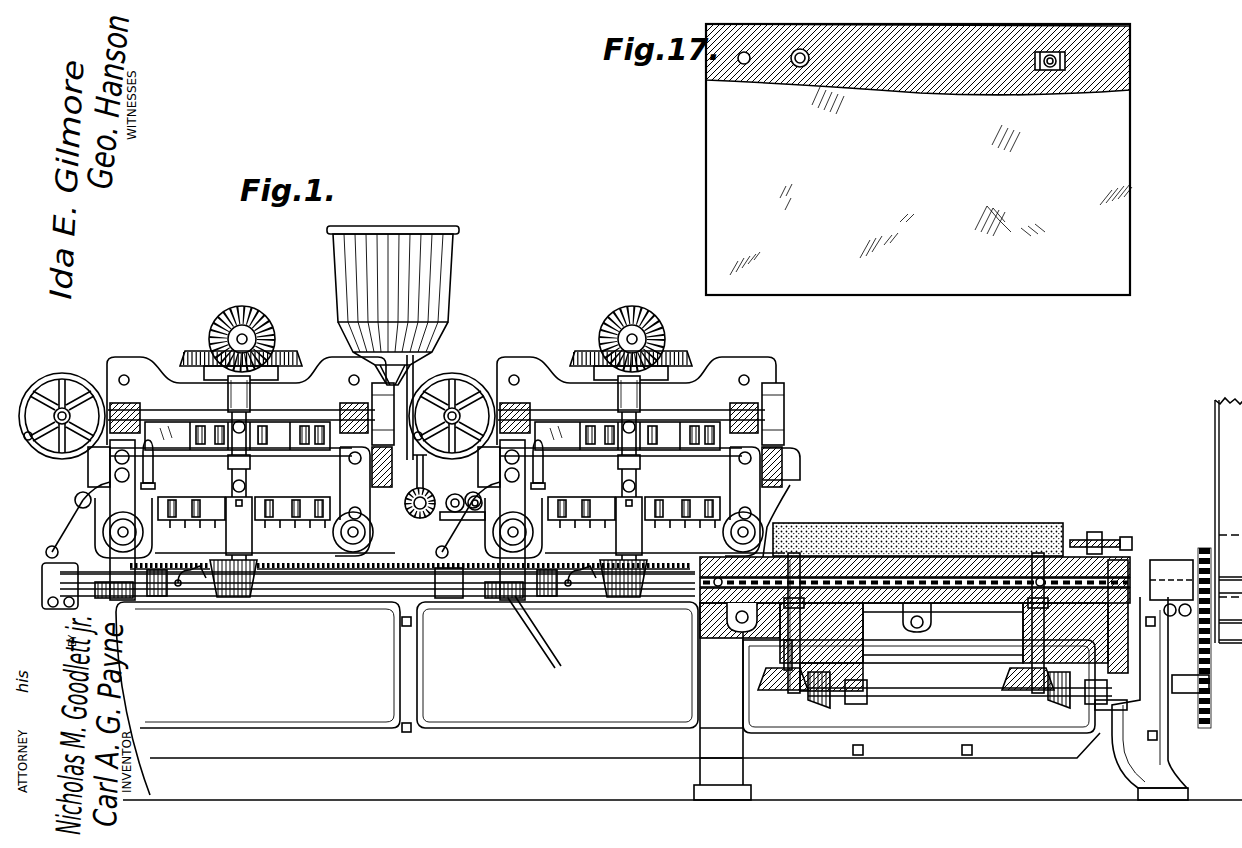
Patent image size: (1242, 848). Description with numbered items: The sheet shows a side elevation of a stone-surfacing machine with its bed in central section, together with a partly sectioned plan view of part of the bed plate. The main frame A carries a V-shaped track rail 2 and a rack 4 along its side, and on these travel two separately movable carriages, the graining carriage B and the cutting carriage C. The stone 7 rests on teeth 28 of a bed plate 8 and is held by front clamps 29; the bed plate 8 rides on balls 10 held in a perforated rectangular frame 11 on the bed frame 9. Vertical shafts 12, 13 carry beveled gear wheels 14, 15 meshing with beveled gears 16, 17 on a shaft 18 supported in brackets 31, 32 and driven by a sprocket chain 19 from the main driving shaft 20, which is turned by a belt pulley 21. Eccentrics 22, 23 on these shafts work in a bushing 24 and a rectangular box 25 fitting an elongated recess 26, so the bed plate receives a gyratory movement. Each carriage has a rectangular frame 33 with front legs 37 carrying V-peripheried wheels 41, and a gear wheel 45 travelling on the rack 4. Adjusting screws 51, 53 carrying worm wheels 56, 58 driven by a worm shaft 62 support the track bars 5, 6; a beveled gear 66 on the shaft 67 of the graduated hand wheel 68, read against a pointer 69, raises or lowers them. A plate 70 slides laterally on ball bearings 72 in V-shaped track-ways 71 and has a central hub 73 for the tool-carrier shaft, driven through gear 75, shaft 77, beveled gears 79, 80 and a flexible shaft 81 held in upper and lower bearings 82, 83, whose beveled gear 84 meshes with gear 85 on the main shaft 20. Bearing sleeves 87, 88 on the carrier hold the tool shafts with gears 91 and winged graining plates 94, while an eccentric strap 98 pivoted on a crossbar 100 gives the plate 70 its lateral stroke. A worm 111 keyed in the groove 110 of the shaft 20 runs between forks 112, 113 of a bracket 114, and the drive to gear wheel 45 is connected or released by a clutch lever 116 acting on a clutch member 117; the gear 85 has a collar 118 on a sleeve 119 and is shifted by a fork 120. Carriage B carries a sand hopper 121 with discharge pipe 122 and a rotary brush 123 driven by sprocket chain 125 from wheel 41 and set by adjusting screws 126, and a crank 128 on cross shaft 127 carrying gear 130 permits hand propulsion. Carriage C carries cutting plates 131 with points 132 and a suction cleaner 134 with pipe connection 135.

In FIG. 1, the main frame A is at (438, 735).
In FIG. 1, the carriage B is at (135, 342).
In FIG. 1, the carriage C is at (537, 344).
In FIG. 1, the V-shaped track rail 2 is at (330, 580).
In FIG. 1, the rack 4 is at (448, 575).
In FIG. 1, the track bar 5 is at (125, 408).
In FIG. 1, the track bar 6 is at (350, 410).
In FIG. 1, the stone 7 is at (965, 536).
In FIG. 17, the bed plate 8 is at (1022, 275).
In FIG. 1, the bed plate 8 is at (920, 567).
In FIG. 1, the bed frame 9 is at (962, 608).
In FIG. 1, the balls 10 is at (995, 608).
In FIG. 1, the rectangular frame 11 is at (742, 625).
In FIG. 1, the vertical shaft 12 is at (785, 653).
In FIG. 1, the vertical shaft 13 is at (1038, 607).
In FIG. 1, the beveled gear wheel 14 is at (780, 680).
In FIG. 1, the beveled gear wheel 15 is at (1015, 675).
In FIG. 1, the beveled gear wheel 16 is at (815, 700).
In FIG. 1, the beveled gear wheel 17 is at (1058, 700).
In FIG. 1, the shaft 18 is at (948, 686).
In FIG. 1, the sprocket chain 19 is at (1210, 655).
In FIG. 1, the main driving shaft 20 is at (305, 575).
In FIG. 1, the belt pulley 21 is at (1208, 540).
In FIG. 17, the eccentric 22 is at (796, 67).
In FIG. 1, the eccentric 22 is at (815, 580).
In FIG. 17, the eccentric 23 is at (1045, 71).
In FIG. 1, the eccentric 23 is at (1072, 548).
In FIG. 17, the bushing 24 is at (806, 67).
In FIG. 1, the bushing 24 is at (794, 556).
In FIG. 17, the rectangular box 25 is at (1062, 71).
In FIG. 1, the rectangular box 25 is at (1046, 556).
In FIG. 17, the rectangular elongated recess 26 is at (1048, 51).
In FIG. 1, the rectangular elongated recess 26 is at (1035, 560).
In FIG. 1, the teeth 28 is at (790, 510).
In FIG. 1, the front clamps 29 is at (1098, 537).
In FIG. 1, the bracket 31 is at (862, 667).
In FIG. 1, the bracket 32 is at (1105, 708).
In FIG. 1, the carriage frame 33 is at (86, 470).
In FIG. 1, the front leg 37 is at (368, 560).
In FIG. 1, the wheel 41 is at (333, 538).
In FIG. 1, the gear wheel 45 is at (100, 528).
In FIG. 1, the adjusting screw 51 is at (470, 494).
In FIG. 1, the adjusting screw 53 is at (345, 460).
In FIG. 1, the worm wheel 56 is at (160, 412).
In FIG. 1, the worm wheel 58 is at (330, 412).
In FIG. 1, the worm shaft 62 is at (190, 415).
In FIG. 1, the beveled gear 66 is at (72, 395).
In FIG. 1, the shaft 67 is at (40, 450).
In FIG. 1, the graduated hand wheel 68 is at (48, 385).
In FIG. 1, the pointer 69 is at (62, 372).
In FIG. 1, the rectangular plate 70 is at (118, 360).
In FIG. 1, the V-shaped track-ways 71 is at (130, 378).
In FIG. 1, the ball bearings 72 is at (350, 374).
In FIG. 1, the central hub 73 is at (260, 385).
In FIG. 1, the gear wheel 75 is at (192, 352).
In FIG. 1, the shaft 77 is at (262, 322).
In FIG. 1, the beveled gear 79 is at (243, 318).
In FIG. 1, the beveled gear 80 is at (260, 338).
In FIG. 1, the extensible flexible shaft 81 is at (250, 468).
In FIG. 1, the upper bearing 82 is at (230, 420).
In FIG. 1, the lower bearing 83 is at (252, 510).
In FIG. 1, the beveled gear wheel 84 is at (247, 597).
In FIG. 1, the gear 85 is at (218, 597).
In FIG. 1, the bearing sleeves 87 is at (328, 452).
In FIG. 1, the bearing sleeves 88 is at (280, 430).
In FIG. 1, the gear wheels 91 is at (210, 428).
In FIG. 1, the steel plate 94 is at (300, 522).
In FIG. 1, the eccentric strap 98 is at (290, 360).
In FIG. 1, the crossbar 100 is at (200, 372).
In FIG. 1, the groove 110 is at (385, 600).
In FIG. 1, the worm 111 is at (125, 598).
In FIG. 1, the arm or fork 112 is at (45, 566).
In FIG. 1, the arm or fork 113 is at (178, 597).
In FIG. 1, the bracket 114 is at (185, 520).
In FIG. 1, the clutch lever 116 is at (150, 482).
In FIG. 1, the clutch member 117 is at (152, 482).
In FIG. 1, the collar 118 is at (224, 565).
In FIG. 1, the sleeve 119 is at (190, 598).
In FIG. 1, the fork 120 is at (188, 568).
In FIG. 1, the hopper 121 is at (450, 265).
In FIG. 1, the discharge pipe 122 is at (384, 455).
In FIG. 1, the rotary brush 123 is at (440, 503).
In FIG. 1, the sprocket chain 125 is at (410, 512).
In FIG. 1, the adjusting screws 126 is at (424, 488).
In FIG. 1, the cross shaft 127 is at (75, 503).
In FIG. 1, the crank 128 is at (52, 548).
In FIG. 1, the gear 130 is at (75, 490).
In FIG. 1, the plate 131 is at (690, 510).
In FIG. 1, the cutting or abrading points 132 is at (665, 522).
In FIG. 1, the pneumatic or suction cleaner 134 is at (420, 518).
In FIG. 1, the pipe connection 135 is at (550, 660).